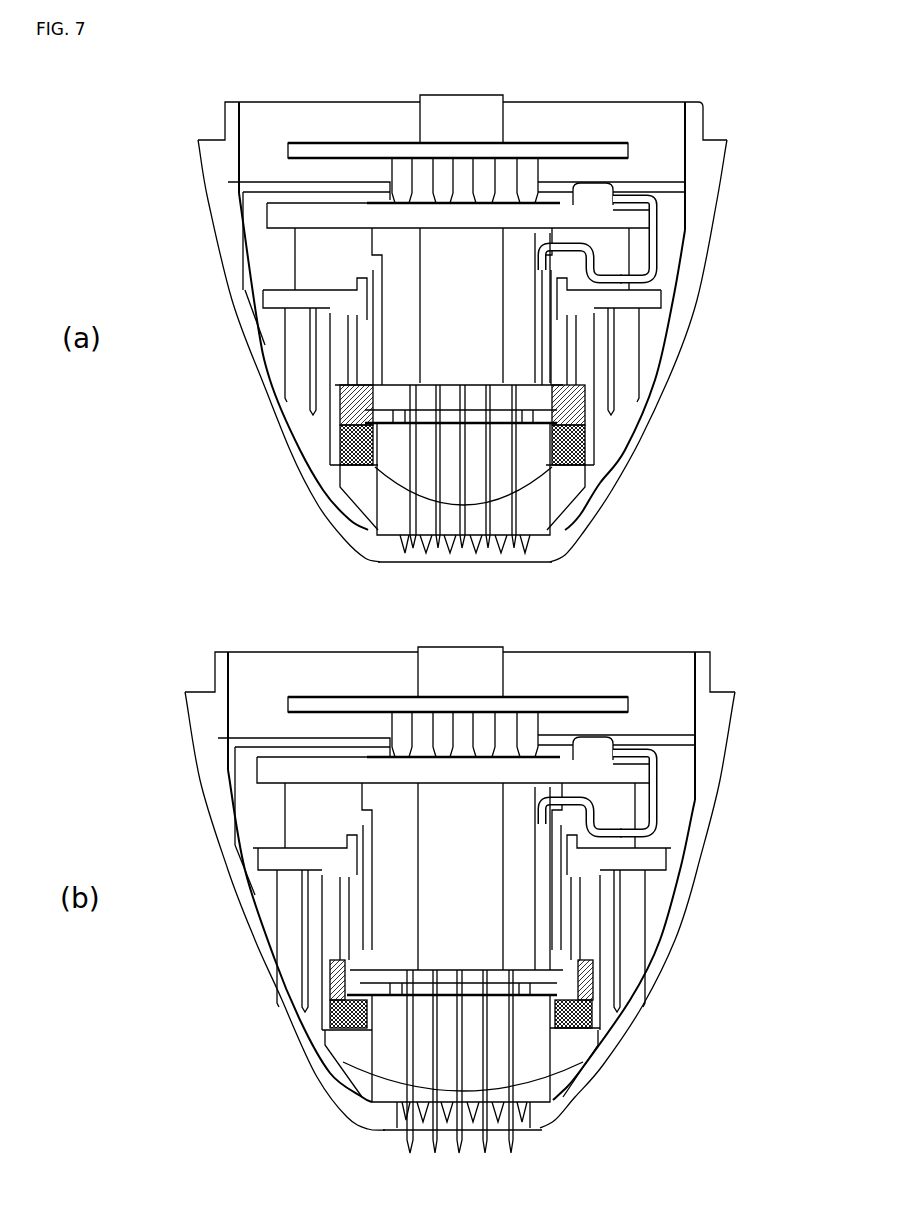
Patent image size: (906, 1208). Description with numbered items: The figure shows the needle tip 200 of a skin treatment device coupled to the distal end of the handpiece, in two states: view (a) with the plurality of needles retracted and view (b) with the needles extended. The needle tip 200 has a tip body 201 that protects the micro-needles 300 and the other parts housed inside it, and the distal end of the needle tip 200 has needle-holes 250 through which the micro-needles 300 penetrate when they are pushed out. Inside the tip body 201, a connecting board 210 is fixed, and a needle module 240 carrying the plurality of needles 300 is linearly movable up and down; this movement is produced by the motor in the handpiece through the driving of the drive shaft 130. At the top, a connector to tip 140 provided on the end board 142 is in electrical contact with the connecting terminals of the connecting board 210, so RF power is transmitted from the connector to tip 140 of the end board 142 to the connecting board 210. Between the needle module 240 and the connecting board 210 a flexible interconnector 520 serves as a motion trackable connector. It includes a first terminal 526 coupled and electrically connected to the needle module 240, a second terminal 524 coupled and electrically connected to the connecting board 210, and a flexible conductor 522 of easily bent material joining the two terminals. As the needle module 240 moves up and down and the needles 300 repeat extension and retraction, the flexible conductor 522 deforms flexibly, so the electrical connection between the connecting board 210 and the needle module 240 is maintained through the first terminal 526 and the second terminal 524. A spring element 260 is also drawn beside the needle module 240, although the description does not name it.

The drive shaft 130 is at (440, 117).
The end board 142 is at (290, 150).
The connector to tip 140 is at (397, 178).
The connecting board 210 is at (288, 223).
The needle module 240 is at (375, 397).
The spring 260 is at (297, 432).
The micro-needles 300 is at (348, 512).
The second terminal 524 is at (613, 187).
The flexible interconnector 520 is at (656, 214).
The flexible conductor 522 is at (652, 253).
The first terminal 526 is at (560, 375).
The needle tip 200 is at (638, 439).
The tip body 201 is at (600, 483).
The needle-holes 250 is at (527, 584).